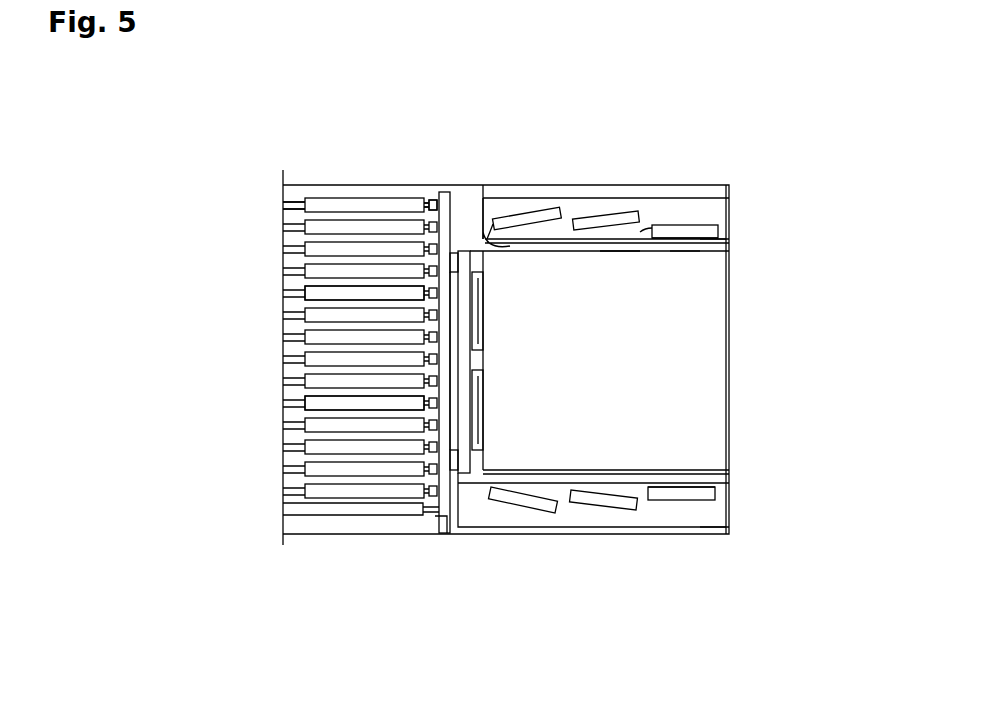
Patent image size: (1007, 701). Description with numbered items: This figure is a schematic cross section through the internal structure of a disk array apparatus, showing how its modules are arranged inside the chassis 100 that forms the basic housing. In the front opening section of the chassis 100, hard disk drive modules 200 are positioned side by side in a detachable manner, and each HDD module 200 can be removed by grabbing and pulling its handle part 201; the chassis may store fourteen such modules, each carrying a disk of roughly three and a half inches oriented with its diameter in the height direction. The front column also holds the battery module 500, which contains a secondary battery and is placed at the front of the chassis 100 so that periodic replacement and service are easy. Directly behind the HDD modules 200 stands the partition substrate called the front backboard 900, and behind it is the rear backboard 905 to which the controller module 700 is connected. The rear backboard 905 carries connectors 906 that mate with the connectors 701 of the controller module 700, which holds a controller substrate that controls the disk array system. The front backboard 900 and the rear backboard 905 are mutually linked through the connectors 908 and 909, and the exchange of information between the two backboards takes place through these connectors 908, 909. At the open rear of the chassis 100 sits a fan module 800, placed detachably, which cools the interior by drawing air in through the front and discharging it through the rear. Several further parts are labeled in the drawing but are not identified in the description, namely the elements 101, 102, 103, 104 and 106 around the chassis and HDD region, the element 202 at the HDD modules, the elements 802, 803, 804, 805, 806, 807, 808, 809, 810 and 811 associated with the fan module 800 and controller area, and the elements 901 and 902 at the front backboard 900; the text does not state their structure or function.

The chassis 100 is at (303, 184).
The outer plate / shell 101 is at (283, 172).
The first contact 102 is at (308, 302).
The second contact 103 is at (312, 414).
The upper housing wall 104 is at (680, 240).
The lower housing wall 106 is at (732, 505).
The hard disk drive module 200 is at (338, 207).
The handle part 201 is at (283, 203).
The terminal neck 202 is at (426, 203).
The battery module 500 is at (310, 516).
The controller module 700 is at (713, 265).
The connectors of the controller module 701 is at (483, 298).
The fan module 800 is at (700, 213).
The first latch element 802 is at (539, 217).
The second latch element 803 is at (603, 223).
The third latch element 804 is at (680, 225).
The lower protrusion 805 is at (453, 527).
The recess 806 is at (552, 209).
The step 807 is at (664, 232).
The support rib 808 is at (720, 230).
The inner wall 809 is at (483, 198).
The guide surface 810 is at (680, 249).
The guide edge 811 is at (610, 240).
The front backboard 900 is at (440, 193).
The bar end 901 is at (446, 534).
The contact block 902 is at (430, 201).
The rear backboard 905 is at (465, 474).
The connectors 906 is at (483, 310).
The connector 908 is at (452, 253).
The connector 909 is at (465, 251).